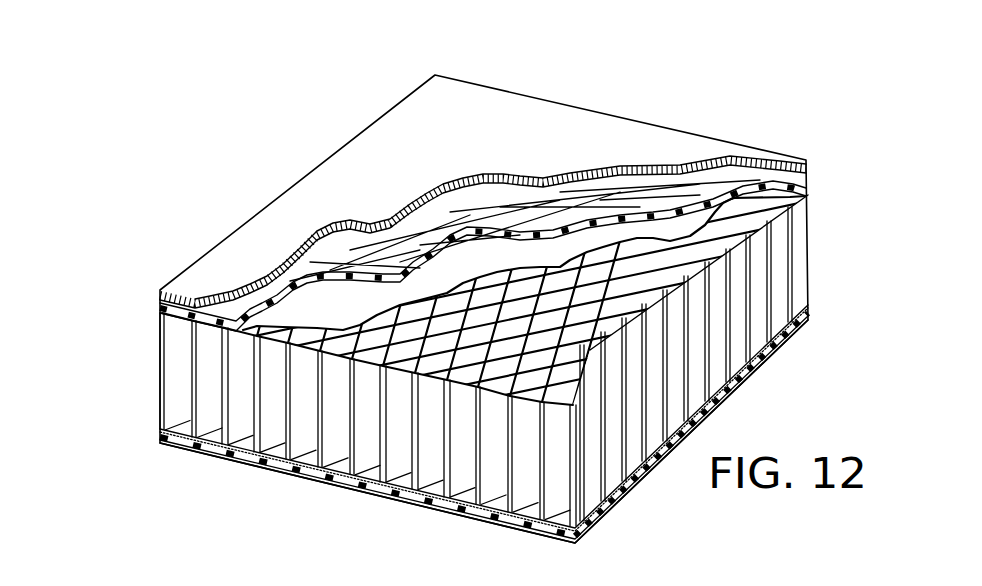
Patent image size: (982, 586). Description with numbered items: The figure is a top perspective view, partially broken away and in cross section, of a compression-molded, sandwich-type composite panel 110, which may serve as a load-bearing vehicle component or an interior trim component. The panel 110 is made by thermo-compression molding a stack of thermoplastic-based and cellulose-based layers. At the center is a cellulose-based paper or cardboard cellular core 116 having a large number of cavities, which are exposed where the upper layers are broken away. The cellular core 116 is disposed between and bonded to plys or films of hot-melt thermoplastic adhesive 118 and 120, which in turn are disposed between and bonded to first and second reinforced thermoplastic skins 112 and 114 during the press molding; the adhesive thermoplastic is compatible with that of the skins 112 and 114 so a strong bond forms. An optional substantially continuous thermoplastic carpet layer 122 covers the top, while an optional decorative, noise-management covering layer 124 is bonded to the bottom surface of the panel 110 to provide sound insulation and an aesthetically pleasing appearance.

The composite panel 110 is at (714, 63).
The first reinforced thermoplastic skin 112 is at (157, 305).
The second reinforced thermoplastic skin 114 is at (162, 442).
The cellular core 116 is at (160, 383).
The sheet of hot-melt adhesive 118 is at (293, 323).
The sheet of hot-melt adhesive 120 is at (160, 420).
The carpet layer 122 is at (158, 291).
The covering layer 124 is at (192, 450).